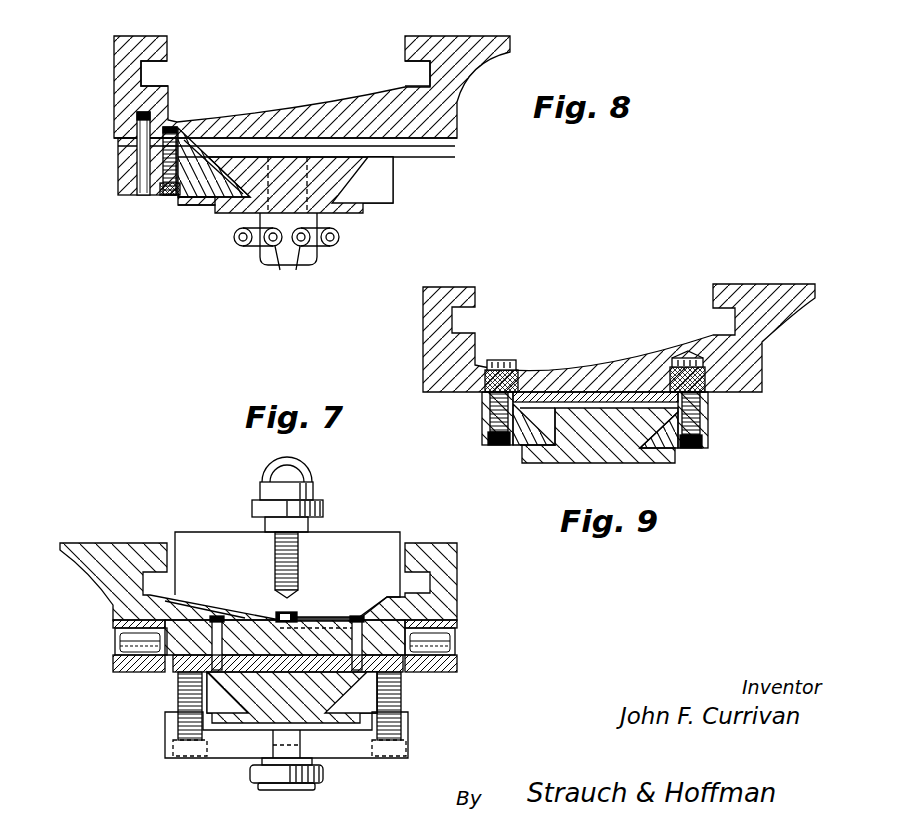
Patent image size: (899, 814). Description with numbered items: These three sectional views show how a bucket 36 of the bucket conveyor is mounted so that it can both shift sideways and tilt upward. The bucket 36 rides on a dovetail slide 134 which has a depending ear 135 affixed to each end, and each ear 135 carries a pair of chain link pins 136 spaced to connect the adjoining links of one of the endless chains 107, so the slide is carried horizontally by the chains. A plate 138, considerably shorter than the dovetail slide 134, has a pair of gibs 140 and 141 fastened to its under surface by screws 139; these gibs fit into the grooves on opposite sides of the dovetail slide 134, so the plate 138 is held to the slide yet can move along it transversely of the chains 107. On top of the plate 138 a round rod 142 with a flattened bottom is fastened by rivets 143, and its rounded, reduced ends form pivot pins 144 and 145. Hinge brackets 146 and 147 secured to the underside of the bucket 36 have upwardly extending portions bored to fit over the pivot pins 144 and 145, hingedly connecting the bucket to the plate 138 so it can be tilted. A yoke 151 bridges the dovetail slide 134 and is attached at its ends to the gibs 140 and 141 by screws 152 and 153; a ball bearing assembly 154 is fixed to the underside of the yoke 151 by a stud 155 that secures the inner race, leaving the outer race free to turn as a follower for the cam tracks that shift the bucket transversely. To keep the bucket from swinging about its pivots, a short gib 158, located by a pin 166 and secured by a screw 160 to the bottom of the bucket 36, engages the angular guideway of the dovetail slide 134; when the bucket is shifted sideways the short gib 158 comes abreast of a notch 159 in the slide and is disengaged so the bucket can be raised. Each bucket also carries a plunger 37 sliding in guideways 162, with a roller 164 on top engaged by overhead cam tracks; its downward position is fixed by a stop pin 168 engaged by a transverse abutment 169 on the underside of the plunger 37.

In FIG. 8, the bucket 36 is at (456, 112).
In FIG. 9, the bucket 36 is at (763, 371).
In FIG. 7, the plunger 37 is at (358, 536).
In FIG. 8, the endless chains 107 is at (253, 247).
In FIG. 8, the dovetail slide 134 is at (350, 213).
In FIG. 9, the dovetail slide 134 is at (606, 460).
In FIG. 7, the dovetail slide 134 is at (312, 709).
In FIG. 8, the depending ear 135 is at (315, 255).
In FIG. 8, the chain link pins 136 is at (281, 268).
In FIG. 8, the plate 138 is at (434, 153).
In FIG. 9, the plate 138 is at (594, 392).
In FIG. 7, the plate 138 is at (180, 662).
In FIG. 9, the screws 139 is at (497, 366).
In FIG. 8, the gib 140 is at (394, 188).
In FIG. 9, the gib 140 is at (672, 440).
In FIG. 7, the gib 140 is at (246, 710).
In FIG. 8, the gib 141 is at (188, 205).
In FIG. 9, the gib 141 is at (508, 447).
In FIG. 7, the gib 141 is at (333, 706).
In FIG. 7, the round rod 142 is at (332, 622).
In FIG. 7, the rivets 143 is at (218, 618).
In FIG. 7, the pivot pin 144 is at (128, 673).
In FIG. 7, the pivot pin 145 is at (428, 672).
In FIG. 7, the hinge bracket 146 is at (118, 663).
In FIG. 7, the hinge bracket 147 is at (455, 668).
In FIG. 7, the yoke 151 is at (355, 750).
In FIG. 7, the screw 152 is at (178, 728).
In FIG. 7, the screw 153 is at (396, 728).
In FIG. 7, the ball bearing assembly 154 is at (323, 775).
In FIG. 7, the stud 155 is at (273, 745).
In FIG. 8, the short gib 158 is at (207, 197).
In FIG. 9, the notch 159 is at (558, 437).
In FIG. 8, the screw 160 is at (167, 194).
In FIG. 8, the guideways 162 is at (166, 64).
In FIG. 7, the roller 164 is at (322, 506).
In FIG. 8, the pin 166 is at (136, 176).
In FIG. 7, the stop pin 168 is at (285, 614).
In FIG. 7, the transverse abutment 169 is at (314, 615).